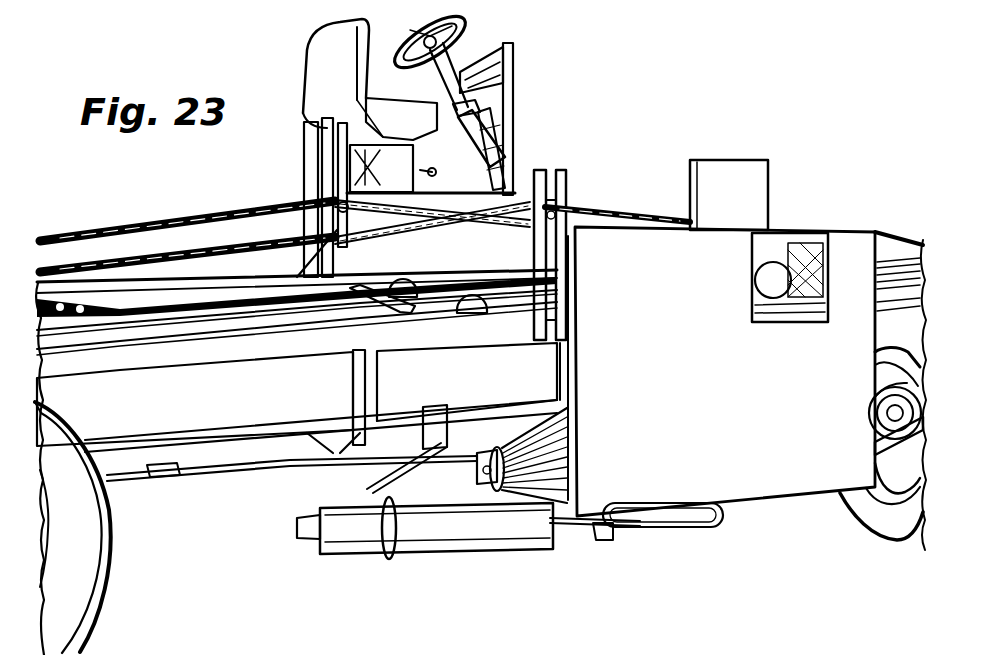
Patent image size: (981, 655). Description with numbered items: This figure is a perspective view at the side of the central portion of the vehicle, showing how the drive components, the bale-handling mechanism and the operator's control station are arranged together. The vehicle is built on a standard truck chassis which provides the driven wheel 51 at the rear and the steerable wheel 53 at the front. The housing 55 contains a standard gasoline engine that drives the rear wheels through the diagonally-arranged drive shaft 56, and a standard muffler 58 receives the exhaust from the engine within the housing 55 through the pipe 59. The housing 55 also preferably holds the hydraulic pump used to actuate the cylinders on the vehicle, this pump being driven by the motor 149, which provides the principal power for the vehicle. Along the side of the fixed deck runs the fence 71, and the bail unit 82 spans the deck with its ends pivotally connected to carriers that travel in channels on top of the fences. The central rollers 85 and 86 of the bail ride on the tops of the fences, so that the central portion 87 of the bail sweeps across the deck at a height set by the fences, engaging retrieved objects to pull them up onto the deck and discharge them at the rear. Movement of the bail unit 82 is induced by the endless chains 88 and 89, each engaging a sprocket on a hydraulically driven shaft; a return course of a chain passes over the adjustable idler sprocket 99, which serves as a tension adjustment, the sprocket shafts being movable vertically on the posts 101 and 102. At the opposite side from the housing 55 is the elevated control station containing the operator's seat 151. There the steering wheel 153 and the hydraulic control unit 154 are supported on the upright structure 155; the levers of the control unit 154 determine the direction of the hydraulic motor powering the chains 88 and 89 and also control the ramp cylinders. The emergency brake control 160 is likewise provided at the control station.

The driven wheel 51 is at (90, 620).
The steerable wheel 53 is at (867, 540).
The housing 55 is at (773, 485).
The drive shaft 56 is at (258, 470).
The muffler 58 is at (437, 550).
The pipe 59 is at (707, 523).
The fence 71 is at (180, 428).
The bail unit 82 is at (227, 290).
The central roller 85 is at (473, 295).
The central roller 86 is at (410, 280).
The central portion of the bail 87 is at (375, 284).
The endless chain 88 is at (140, 223).
The endless chain 89 is at (618, 207).
The adjustable idler sprocket 99 is at (282, 205).
The post 101 is at (312, 100).
The post 102 is at (560, 173).
The motor 149 is at (557, 540).
The operator's seat 151 is at (308, 65).
The steering wheel 153 is at (470, 32).
The hydraulic control unit 154 is at (500, 83).
The upright structure 155 is at (517, 120).
The emergency brake control 160 is at (436, 172).